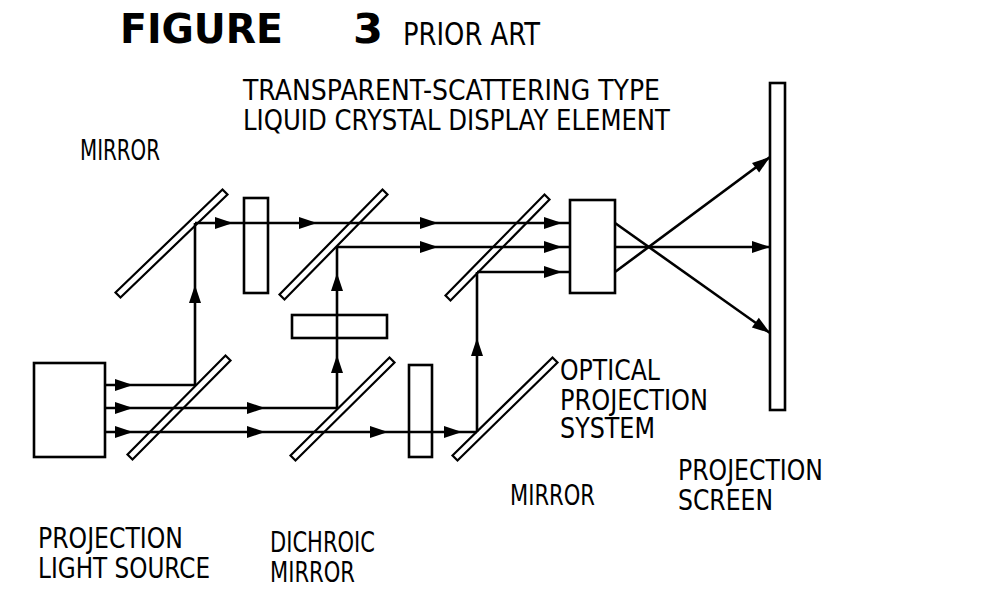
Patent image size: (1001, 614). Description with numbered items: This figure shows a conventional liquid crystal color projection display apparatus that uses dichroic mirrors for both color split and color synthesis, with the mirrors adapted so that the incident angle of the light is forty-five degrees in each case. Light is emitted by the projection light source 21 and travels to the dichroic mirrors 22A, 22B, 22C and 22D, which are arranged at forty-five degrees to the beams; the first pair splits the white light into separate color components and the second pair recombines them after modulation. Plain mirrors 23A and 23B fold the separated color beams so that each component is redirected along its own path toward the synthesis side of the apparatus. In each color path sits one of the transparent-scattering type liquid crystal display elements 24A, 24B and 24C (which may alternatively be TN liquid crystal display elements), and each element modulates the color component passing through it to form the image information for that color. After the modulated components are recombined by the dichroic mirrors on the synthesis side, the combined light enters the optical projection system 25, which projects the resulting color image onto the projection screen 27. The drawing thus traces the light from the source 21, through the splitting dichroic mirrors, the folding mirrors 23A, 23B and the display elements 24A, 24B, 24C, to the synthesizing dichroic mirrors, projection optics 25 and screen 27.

The projection light source 21 is at (65, 457).
The dichroic mirror 22A is at (152, 441).
The dichroic mirror 22B is at (312, 443).
The dichroic mirror 22C is at (352, 212).
The dichroic mirror 22D is at (514, 210).
The mirror 23A is at (172, 240).
The mirror 23B is at (490, 432).
The transparent-scattering type liquid crystal display element 24A is at (257, 198).
The transparent-scattering type liquid crystal display element 24B is at (385, 300).
The transparent-scattering type liquid crystal display element 24C is at (418, 457).
The optical projection system 25 is at (593, 295).
The projection screen 27 is at (768, 398).